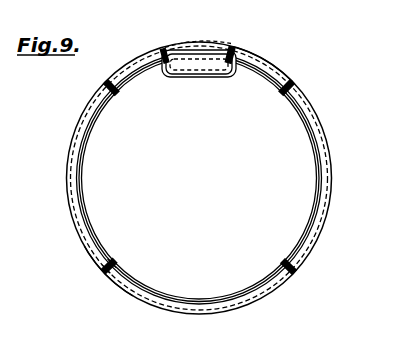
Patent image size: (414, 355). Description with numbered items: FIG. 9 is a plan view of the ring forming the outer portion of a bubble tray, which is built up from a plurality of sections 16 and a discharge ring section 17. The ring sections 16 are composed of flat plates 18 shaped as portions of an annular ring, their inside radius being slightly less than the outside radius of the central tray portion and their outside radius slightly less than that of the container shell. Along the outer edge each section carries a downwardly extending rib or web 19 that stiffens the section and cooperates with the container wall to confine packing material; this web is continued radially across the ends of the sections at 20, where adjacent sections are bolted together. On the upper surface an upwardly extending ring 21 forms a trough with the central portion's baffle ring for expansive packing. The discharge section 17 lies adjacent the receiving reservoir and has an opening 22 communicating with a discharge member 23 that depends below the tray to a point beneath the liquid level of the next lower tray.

The ring sections 16 is at (67, 163).
The discharge ring section 17 is at (269, 70).
The flat plates 18 is at (141, 296).
The rib or web 19 is at (118, 284).
The radial web 20 is at (105, 266).
The upwardly extending ring 21 is at (81, 156).
The opening 22 is at (232, 47).
The discharge member 23 is at (212, 74).